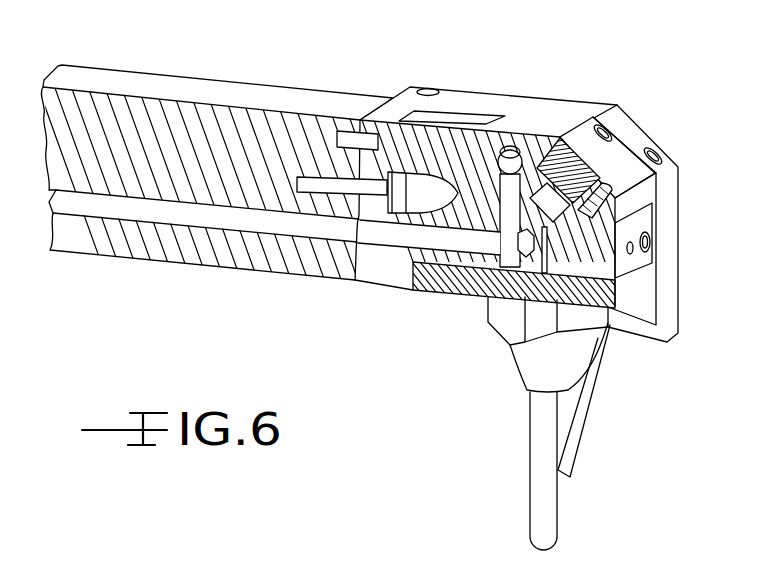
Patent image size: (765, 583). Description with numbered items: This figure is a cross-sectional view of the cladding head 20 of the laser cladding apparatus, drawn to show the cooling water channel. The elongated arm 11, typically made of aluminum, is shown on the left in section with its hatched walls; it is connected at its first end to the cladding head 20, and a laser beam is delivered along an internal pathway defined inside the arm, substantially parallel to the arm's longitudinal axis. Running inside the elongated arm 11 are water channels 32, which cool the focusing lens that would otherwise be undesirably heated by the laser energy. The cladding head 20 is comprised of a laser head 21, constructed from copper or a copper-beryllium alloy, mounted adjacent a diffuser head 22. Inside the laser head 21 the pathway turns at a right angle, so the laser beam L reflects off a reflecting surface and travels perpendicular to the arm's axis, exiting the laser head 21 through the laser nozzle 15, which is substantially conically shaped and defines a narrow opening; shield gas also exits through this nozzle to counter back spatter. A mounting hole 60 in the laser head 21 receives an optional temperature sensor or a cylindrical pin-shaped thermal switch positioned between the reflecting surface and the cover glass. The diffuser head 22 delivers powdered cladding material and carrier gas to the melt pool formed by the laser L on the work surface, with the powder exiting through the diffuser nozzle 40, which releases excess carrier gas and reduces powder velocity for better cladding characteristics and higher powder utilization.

The elongated arm 11 is at (177, 72).
The cladding head 20 is at (398, 190).
The laser head 21 is at (545, 120).
The diffuser head 22 is at (595, 98).
The mounting hole 60 is at (655, 210).
The water channels 32 is at (153, 211).
The laser nozzle 15 is at (522, 363).
The diffuser nozzle 40 is at (567, 438).
The laser beam L is at (543, 470).